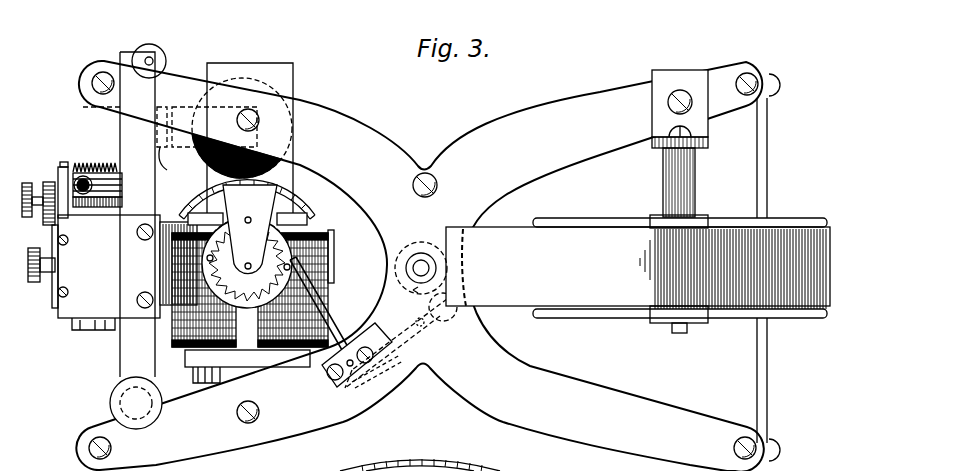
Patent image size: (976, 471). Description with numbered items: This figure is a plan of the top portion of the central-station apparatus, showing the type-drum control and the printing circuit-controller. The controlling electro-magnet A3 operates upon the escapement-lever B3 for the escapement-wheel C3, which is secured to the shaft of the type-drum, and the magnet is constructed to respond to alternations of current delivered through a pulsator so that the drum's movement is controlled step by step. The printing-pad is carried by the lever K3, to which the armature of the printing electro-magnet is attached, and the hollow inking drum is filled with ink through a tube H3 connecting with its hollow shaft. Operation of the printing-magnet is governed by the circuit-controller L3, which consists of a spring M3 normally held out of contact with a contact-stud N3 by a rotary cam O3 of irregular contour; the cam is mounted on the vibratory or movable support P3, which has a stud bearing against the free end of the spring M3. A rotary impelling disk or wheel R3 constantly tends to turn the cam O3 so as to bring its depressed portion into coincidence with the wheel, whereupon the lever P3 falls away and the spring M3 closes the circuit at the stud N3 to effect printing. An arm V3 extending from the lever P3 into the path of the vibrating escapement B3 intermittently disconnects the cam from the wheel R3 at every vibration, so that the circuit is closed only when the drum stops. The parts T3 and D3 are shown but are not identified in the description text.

The tube H3 is at (91, 236).
The disc T3 is at (232, 138).
The lever K3 is at (132, 236).
The escapement-lever B3 is at (283, 217).
The escapement-wheel C3 is at (230, 263).
The controlling electro-magnet A3 is at (336, 258).
The rotary impelling disk or wheel R3 is at (415, 247).
The cylinder D3 is at (638, 268).
The contact-stud N3 is at (399, 273).
The arm V3 is at (323, 303).
The vibratory or movable support P3 is at (396, 343).
The rotary cam O3 is at (446, 321).
The spring M3 is at (402, 368).
The circuit-controller L3 is at (428, 266).